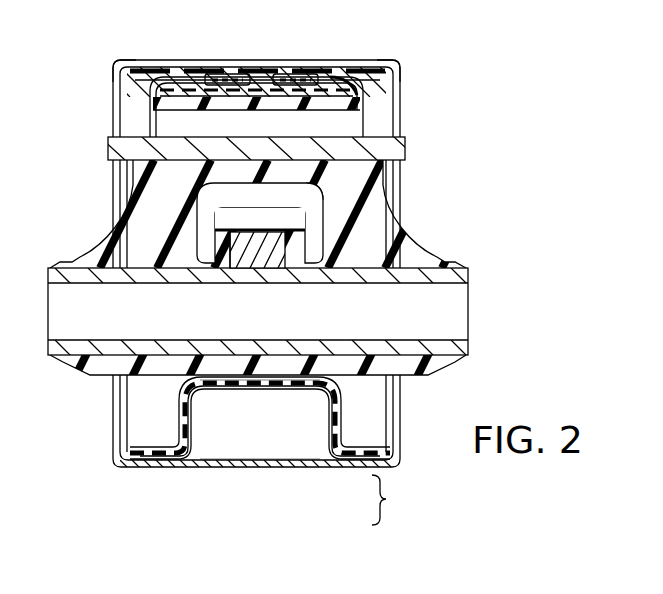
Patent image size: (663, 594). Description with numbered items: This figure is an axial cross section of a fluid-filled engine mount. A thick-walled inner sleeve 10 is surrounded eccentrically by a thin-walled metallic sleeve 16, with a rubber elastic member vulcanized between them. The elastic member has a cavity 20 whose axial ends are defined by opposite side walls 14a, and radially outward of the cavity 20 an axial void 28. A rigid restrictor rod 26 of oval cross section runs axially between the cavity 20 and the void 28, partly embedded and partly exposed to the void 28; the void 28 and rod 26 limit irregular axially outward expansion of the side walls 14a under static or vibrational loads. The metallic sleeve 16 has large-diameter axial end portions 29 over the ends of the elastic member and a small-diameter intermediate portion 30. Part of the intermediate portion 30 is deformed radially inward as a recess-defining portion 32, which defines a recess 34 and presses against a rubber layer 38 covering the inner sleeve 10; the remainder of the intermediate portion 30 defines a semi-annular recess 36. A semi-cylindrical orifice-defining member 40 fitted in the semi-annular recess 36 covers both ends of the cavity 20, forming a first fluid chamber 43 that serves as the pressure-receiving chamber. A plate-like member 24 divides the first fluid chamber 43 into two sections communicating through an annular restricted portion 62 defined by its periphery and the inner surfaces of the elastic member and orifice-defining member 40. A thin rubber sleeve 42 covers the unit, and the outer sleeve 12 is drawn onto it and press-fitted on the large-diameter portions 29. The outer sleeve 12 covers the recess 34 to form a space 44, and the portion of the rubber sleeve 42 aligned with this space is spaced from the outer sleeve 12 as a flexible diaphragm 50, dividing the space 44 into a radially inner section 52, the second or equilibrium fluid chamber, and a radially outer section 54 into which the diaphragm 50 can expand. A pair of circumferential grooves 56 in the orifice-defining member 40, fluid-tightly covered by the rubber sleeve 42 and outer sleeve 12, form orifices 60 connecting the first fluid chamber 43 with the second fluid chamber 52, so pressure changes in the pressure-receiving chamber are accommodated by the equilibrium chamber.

The inner sleeve 10 is at (380, 275).
The outer sleeve 12 is at (162, 467).
The side walls of the elastic member 14a is at (130, 215).
The metallic sleeve 16 is at (360, 90).
The cavity 20 is at (202, 210).
The plate-like member 24 is at (243, 256).
The restrictor rod 26 is at (390, 148).
The axial void 28 is at (178, 125).
The large-diameter end portions 29 is at (130, 72).
The small-diameter intermediate portion 30 is at (253, 97).
The recess-defining portion 32 is at (335, 415).
The recess 34 is at (197, 417).
The semi-annular recess 36 is at (320, 90).
The rubber layer 38 is at (180, 377).
The orifice-defining member 40 is at (190, 82).
The rubber sleeve 42 is at (147, 72).
The first fluid chamber 43 is at (300, 193).
The space 44 is at (393, 500).
The flexible diaphragm 50 is at (247, 388).
The second fluid chamber 52 is at (275, 388).
The radially outer section 54 is at (275, 442).
The circumferential grooves 56 is at (238, 75).
The orifices 60 is at (208, 75).
The restricted portion 62 is at (303, 255).